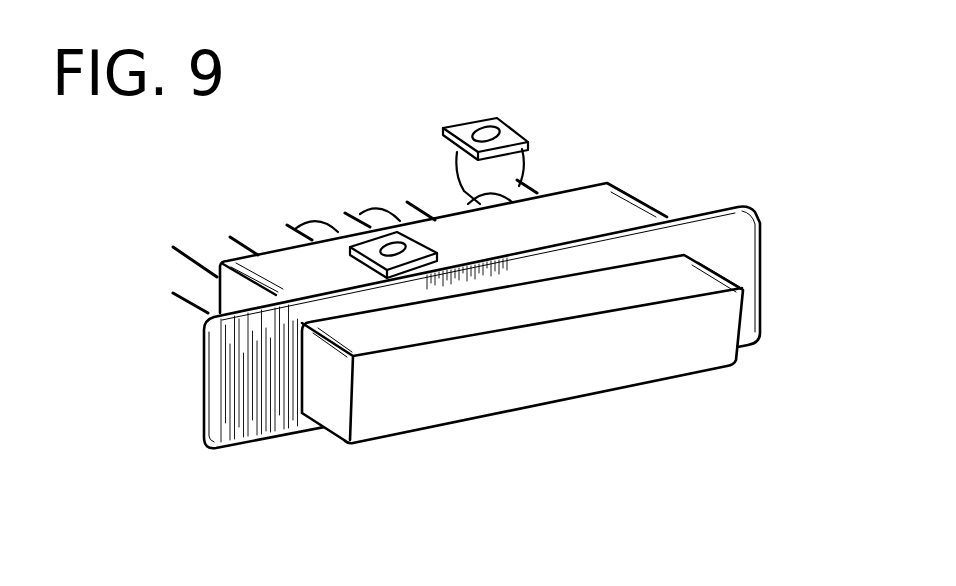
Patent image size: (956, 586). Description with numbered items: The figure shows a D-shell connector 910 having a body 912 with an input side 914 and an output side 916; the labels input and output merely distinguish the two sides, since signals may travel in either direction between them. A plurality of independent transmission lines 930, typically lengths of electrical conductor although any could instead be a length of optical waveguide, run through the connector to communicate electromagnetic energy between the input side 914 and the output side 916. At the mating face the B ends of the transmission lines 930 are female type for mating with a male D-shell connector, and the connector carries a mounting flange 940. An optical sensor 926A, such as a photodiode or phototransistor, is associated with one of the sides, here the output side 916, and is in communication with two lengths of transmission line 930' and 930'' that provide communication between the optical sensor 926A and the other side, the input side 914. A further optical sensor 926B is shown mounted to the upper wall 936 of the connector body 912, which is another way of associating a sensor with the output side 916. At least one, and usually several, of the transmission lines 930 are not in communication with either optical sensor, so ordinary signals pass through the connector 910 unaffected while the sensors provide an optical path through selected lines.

The connector 910 is at (674, 110).
The body 912 is at (652, 208).
The input side 914 is at (727, 373).
The output side 916 is at (163, 266).
The optical sensor 926A is at (503, 120).
The optical sensor 926B is at (410, 247).
The transmission lines 930 is at (339, 345).
The transmission line 930' is at (706, 235).
The transmission line 930'' is at (637, 324).
The upper wall 936 is at (343, 286).
The mounting flange 940 is at (230, 397).